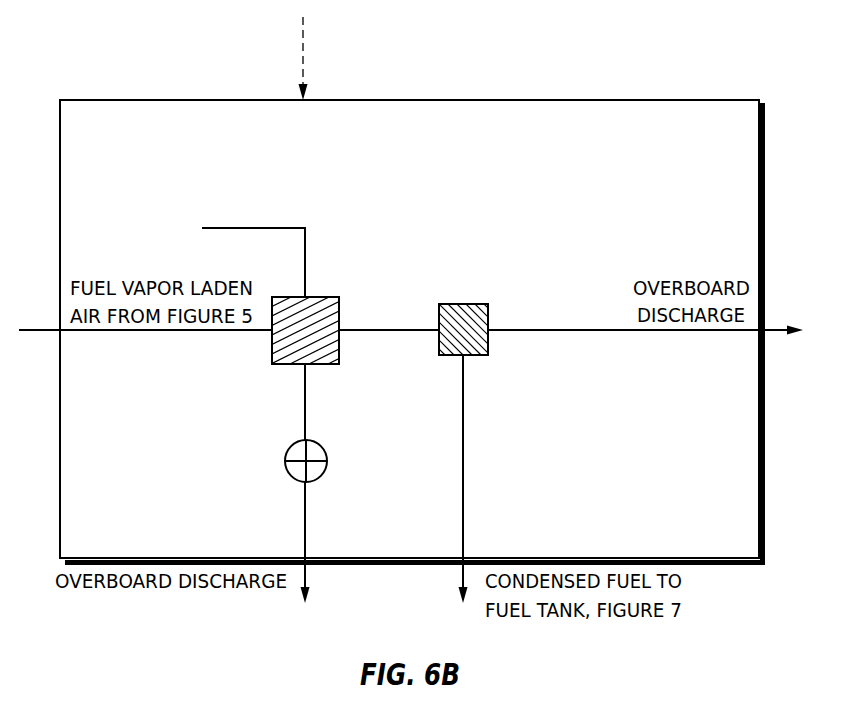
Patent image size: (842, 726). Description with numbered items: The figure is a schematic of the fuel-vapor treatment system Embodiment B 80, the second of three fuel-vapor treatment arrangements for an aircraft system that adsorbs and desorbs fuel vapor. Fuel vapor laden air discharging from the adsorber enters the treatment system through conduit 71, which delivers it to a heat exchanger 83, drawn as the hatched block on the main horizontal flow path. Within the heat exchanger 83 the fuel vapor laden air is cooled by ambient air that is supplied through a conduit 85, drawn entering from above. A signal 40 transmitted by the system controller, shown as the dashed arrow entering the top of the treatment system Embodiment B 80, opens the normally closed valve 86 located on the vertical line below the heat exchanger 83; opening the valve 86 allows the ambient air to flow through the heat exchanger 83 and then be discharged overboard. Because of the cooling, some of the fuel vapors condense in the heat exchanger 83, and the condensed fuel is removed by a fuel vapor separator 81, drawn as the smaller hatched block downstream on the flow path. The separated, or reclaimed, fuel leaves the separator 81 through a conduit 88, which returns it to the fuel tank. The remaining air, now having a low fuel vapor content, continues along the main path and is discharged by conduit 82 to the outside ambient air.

The signal 40 is at (305, 32).
The fuel-vapor treatment system Embodiment B 80 is at (613, 100).
The conduit 85 is at (253, 228).
The heat exchanger 83 is at (320, 296).
The fuel vapor separator 81 is at (465, 303).
The conduit 71 is at (176, 328).
The conduit 82 is at (627, 332).
The normally closed valve 86 is at (285, 460).
The conduit 88 is at (463, 462).